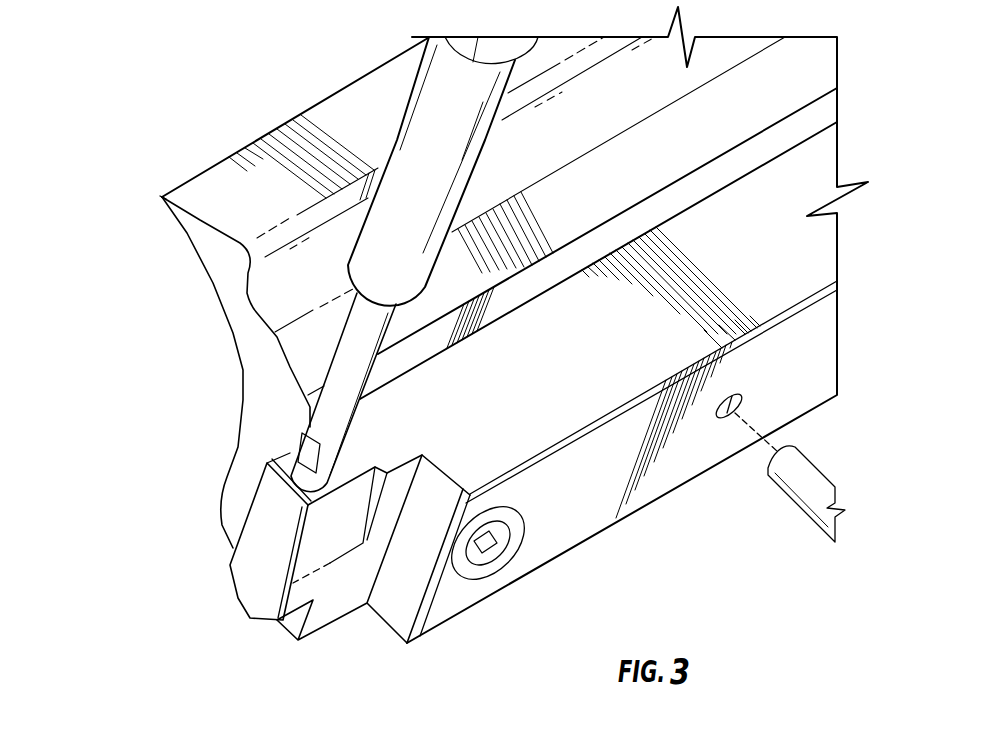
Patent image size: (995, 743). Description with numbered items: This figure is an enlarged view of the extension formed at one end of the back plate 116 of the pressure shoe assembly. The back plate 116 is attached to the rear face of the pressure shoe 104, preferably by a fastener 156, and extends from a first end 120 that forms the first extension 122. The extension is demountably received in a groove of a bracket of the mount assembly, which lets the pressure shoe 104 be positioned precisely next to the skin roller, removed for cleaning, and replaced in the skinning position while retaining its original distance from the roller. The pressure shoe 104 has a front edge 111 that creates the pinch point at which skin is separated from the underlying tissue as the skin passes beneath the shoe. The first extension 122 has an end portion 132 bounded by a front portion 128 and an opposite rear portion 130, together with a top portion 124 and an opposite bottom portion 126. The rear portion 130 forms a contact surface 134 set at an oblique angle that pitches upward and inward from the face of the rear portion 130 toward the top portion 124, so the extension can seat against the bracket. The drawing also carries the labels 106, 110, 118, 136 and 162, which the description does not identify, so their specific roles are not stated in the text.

The pressure shoe 104 is at (128, 260).
The top surface of tool holder 106 is at (310, 128).
The clamp 110 is at (230, 333).
The front edge 111 is at (163, 197).
The back plate 116 is at (635, 530).
The side surface of tool holder 118 is at (563, 412).
The first end 120 is at (171, 534).
The first extension 122 is at (165, 579).
The top portion 124 is at (283, 462).
The bottom portion 126 is at (242, 613).
The front portion 128 is at (250, 503).
The rear portion 130 is at (343, 600).
The end portion 132 is at (230, 580).
The contact surface 134 is at (340, 523).
The clamping edge 136 is at (263, 481).
The fastener 156 is at (472, 560).
The clamping screw 162 is at (450, 170).